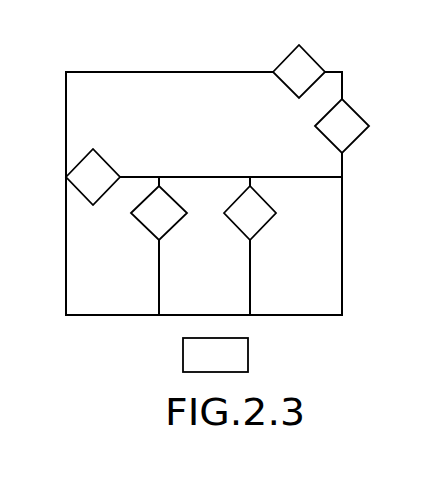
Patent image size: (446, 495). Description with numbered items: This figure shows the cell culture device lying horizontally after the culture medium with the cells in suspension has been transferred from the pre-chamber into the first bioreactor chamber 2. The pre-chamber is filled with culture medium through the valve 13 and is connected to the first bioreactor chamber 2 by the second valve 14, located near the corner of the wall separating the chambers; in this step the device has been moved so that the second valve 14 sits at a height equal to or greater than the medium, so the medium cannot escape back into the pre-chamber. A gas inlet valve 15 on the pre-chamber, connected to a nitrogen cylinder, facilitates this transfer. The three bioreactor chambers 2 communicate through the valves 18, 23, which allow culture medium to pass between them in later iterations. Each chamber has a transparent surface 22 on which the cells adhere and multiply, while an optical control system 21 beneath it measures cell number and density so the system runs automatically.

The valve 13 is at (342, 126).
The second valve 14 is at (93, 177).
The gas inlet valve 15 is at (299, 71).
The valve 18 is at (159, 213).
The valve 23 is at (250, 213).
The optical control system 21 is at (215, 355).
The bioreactor chamber 2 is at (203, 256).
The transparent surface 22 is at (203, 298).